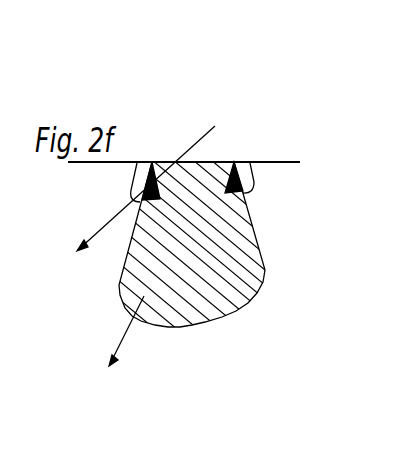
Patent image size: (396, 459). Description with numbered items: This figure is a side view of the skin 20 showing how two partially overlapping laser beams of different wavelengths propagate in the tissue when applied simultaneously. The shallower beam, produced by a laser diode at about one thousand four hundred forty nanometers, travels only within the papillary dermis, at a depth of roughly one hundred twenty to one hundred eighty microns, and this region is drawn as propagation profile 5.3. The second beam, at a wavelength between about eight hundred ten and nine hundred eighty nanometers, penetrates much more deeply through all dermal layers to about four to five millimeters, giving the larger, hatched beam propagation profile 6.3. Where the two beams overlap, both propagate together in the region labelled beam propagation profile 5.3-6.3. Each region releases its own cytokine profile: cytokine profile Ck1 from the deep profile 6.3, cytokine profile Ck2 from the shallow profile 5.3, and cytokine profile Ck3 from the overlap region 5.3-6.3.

The skin 20 is at (301, 168).
The propagation profile of beam 5.1 5.3 is at (151, 162).
The beam propagation profile of beam 6.1 6.3 is at (242, 296).
The beam propagation profile of overlapping beams 5.3-6.3 is at (234, 162).
The cytokines released by laser 6.1 Ck1 is at (108, 351).
The cytokines released by laser 5.1 Ck2 is at (121, 210).
The cytokines released by the overlap of beams 5.1 and 6.1 Ck3 is at (243, 199).